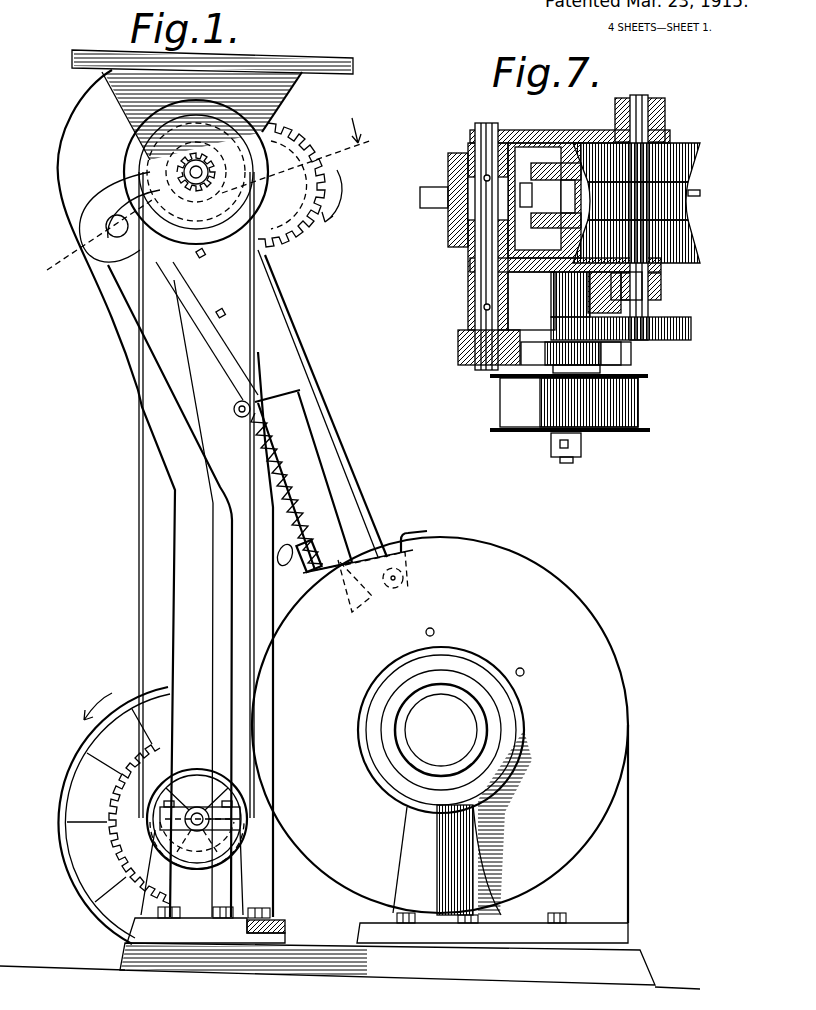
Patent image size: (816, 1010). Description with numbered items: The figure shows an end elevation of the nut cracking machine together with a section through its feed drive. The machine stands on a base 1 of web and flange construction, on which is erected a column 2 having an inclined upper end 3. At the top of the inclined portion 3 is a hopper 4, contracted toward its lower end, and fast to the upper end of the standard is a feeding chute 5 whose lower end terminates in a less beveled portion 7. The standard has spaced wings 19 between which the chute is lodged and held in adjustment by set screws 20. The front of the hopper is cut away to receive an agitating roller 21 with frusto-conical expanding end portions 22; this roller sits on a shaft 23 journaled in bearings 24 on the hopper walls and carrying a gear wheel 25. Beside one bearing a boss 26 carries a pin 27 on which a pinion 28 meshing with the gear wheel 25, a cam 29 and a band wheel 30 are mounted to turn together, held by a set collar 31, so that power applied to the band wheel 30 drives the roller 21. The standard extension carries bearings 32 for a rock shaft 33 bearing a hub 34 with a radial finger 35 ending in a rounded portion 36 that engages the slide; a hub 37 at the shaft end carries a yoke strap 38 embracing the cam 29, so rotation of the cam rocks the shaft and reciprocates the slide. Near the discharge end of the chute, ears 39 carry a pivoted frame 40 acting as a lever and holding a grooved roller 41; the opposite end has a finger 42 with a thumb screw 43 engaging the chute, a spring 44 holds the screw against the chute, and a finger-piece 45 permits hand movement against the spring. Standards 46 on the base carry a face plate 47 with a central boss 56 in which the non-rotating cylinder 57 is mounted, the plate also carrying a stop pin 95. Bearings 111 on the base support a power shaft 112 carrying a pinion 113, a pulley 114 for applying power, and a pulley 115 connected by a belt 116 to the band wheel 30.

In FIG. 1, the base 1 is at (400, 972).
In FIG. 1, the column 2 is at (180, 588).
In FIG. 1, the inclined upper end 3 is at (110, 330).
In FIG. 1, the hopper 4 is at (286, 94).
In FIG. 1, the chute 5 is at (287, 342).
In FIG. 1, the less beveled portion 7 is at (207, 203).
In FIG. 1, the wings 19 is at (226, 376).
In FIG. 1, the set screws 20 is at (207, 324).
In FIG. 7, the agitating roller 21 is at (700, 197).
In FIG. 1, the expanding end portions 22 is at (312, 144).
In FIG. 7, the expanding end portions 22 is at (701, 150).
In FIG. 1, the shaft 23 is at (289, 185).
In FIG. 7, the shaft 23 is at (672, 282).
In FIG. 7, the bearings 24 is at (666, 110).
In FIG. 1, the gear wheel 25 is at (332, 212).
In FIG. 7, the gear wheel 25 is at (692, 330).
In FIG. 7, the boss 26 is at (551, 304).
In FIG. 1, the pin 27 is at (196, 160).
In FIG. 7, the pin 27 is at (570, 461).
In FIG. 1, the pinion 28 is at (187, 171).
In FIG. 7, the pinion 28 is at (553, 333).
In FIG. 1, the cam 29 is at (199, 208).
In FIG. 7, the cam 29 is at (552, 352).
In FIG. 1, the band wheel 30 is at (160, 124).
In FIG. 7, the band wheel 30 is at (640, 406).
In FIG. 7, the set collar 31 is at (582, 446).
In FIG. 7, the bearings 32 is at (468, 152).
In FIG. 1, the rock shaft 33 is at (107, 223).
In FIG. 7, the rock shaft 33 is at (487, 126).
In FIG. 7, the hub 34 is at (480, 196).
In FIG. 7, the radial finger 35 is at (518, 235).
In FIG. 7, the rounded portion 36 is at (531, 172).
In FIG. 7, the hub 37 is at (458, 342).
In FIG. 1, the yoke strap 38 is at (175, 262).
In FIG. 7, the yoke strap 38 is at (622, 354).
In FIG. 1, the ears 39 is at (350, 563).
In FIG. 1, the frame 40 is at (335, 592).
In FIG. 1, the roller 41 is at (406, 585).
In FIG. 1, the finger 42 is at (292, 571).
In FIG. 1, the thumb screw 43 is at (275, 550).
In FIG. 1, the spring 44 is at (293, 503).
In FIG. 1, the finger-piece 45 is at (431, 528).
In FIG. 1, the standards 46 is at (413, 840).
In FIG. 1, the face plate 47 is at (440, 730).
In FIG. 1, the central boss 56 is at (387, 682).
In FIG. 1, the cylinder 57 is at (452, 683).
In FIG. 1, the stop pin 95 is at (433, 629).
In FIG. 1, the bearings 111 is at (157, 895).
In FIG. 1, the power shaft 112 is at (192, 858).
In FIG. 1, the pinion 113 is at (113, 845).
In FIG. 1, the pulley 114 is at (83, 747).
In FIG. 1, the pulley 115 is at (200, 767).
In FIG. 1, the belt 116 is at (138, 646).